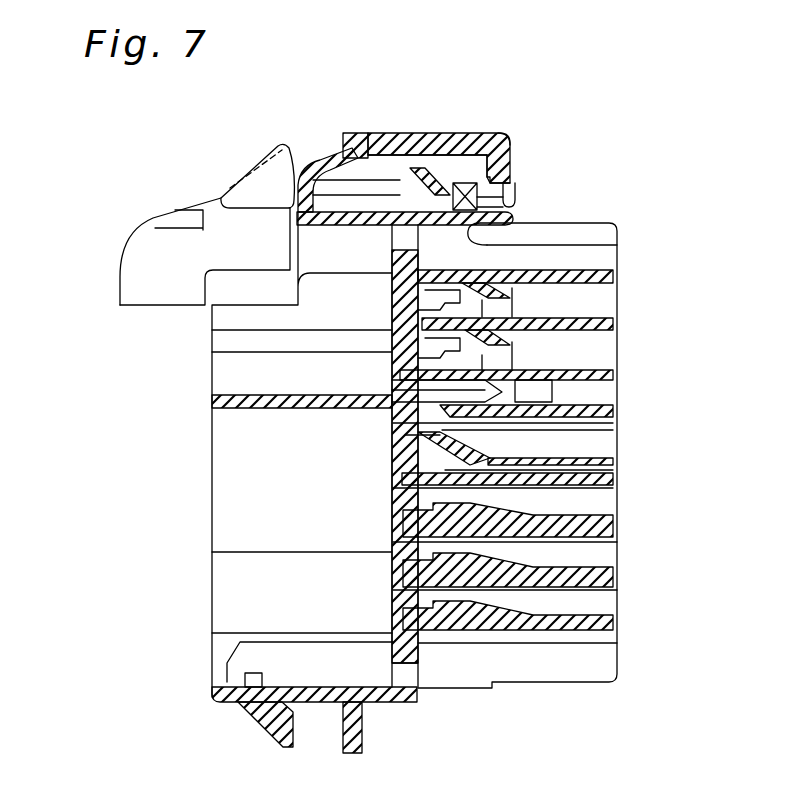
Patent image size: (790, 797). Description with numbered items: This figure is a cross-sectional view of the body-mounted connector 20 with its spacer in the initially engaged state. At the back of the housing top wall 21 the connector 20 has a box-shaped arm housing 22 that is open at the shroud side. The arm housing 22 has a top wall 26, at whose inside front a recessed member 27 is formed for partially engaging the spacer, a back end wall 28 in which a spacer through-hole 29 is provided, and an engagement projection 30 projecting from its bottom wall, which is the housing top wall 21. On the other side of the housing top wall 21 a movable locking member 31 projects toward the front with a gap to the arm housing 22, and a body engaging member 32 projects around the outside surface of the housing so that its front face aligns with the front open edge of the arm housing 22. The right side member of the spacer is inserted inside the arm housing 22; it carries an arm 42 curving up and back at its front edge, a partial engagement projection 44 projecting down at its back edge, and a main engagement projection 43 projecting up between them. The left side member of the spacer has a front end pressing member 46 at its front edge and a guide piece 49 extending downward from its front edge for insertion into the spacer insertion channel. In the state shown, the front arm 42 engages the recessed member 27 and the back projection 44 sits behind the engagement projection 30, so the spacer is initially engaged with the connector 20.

The connector 20 is at (665, 169).
The top wall 21 is at (617, 242).
The arm housing 22 is at (447, 130).
The top wall 26 is at (415, 135).
The recessed member 27 is at (370, 110).
The back end wall 28 is at (513, 152).
The spacer through-hole 29 is at (515, 182).
The engagement projection 30 is at (505, 130).
The movable locking member 31 is at (262, 182).
The body engaging member 32 is at (363, 727).
The arm 42 is at (313, 157).
The main engagement projection 43 is at (443, 187).
The partial engagement projection 44 is at (515, 200).
The front end pressing member 46 is at (192, 208).
The guide piece 49 is at (147, 260).